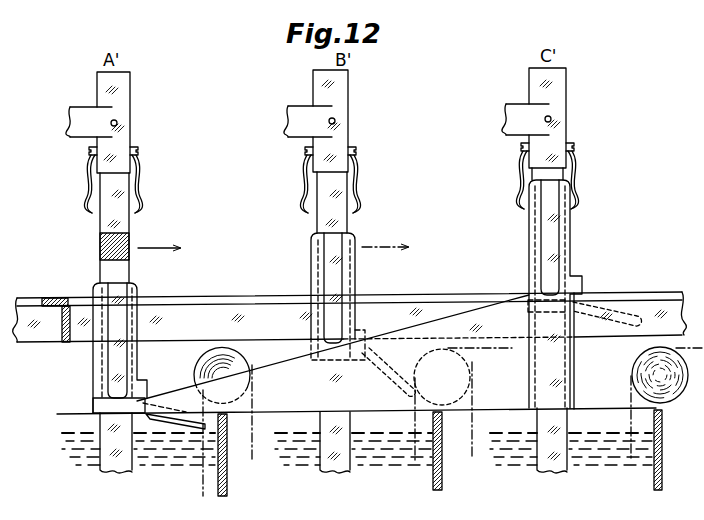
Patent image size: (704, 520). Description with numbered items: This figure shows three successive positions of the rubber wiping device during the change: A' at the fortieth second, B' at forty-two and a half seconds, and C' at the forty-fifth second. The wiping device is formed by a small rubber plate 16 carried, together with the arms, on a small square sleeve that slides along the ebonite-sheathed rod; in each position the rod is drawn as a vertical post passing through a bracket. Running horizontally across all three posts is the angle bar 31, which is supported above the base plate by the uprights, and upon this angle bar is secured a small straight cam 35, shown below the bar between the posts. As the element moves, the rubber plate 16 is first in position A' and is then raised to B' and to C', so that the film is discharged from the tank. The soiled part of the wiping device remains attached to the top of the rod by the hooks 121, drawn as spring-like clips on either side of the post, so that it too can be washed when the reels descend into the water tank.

The rubber plate 16 is at (180, 417).
The angle bar 31 is at (233, 297).
The straight cam 35 is at (477, 320).
The hooks 121 is at (518, 190).